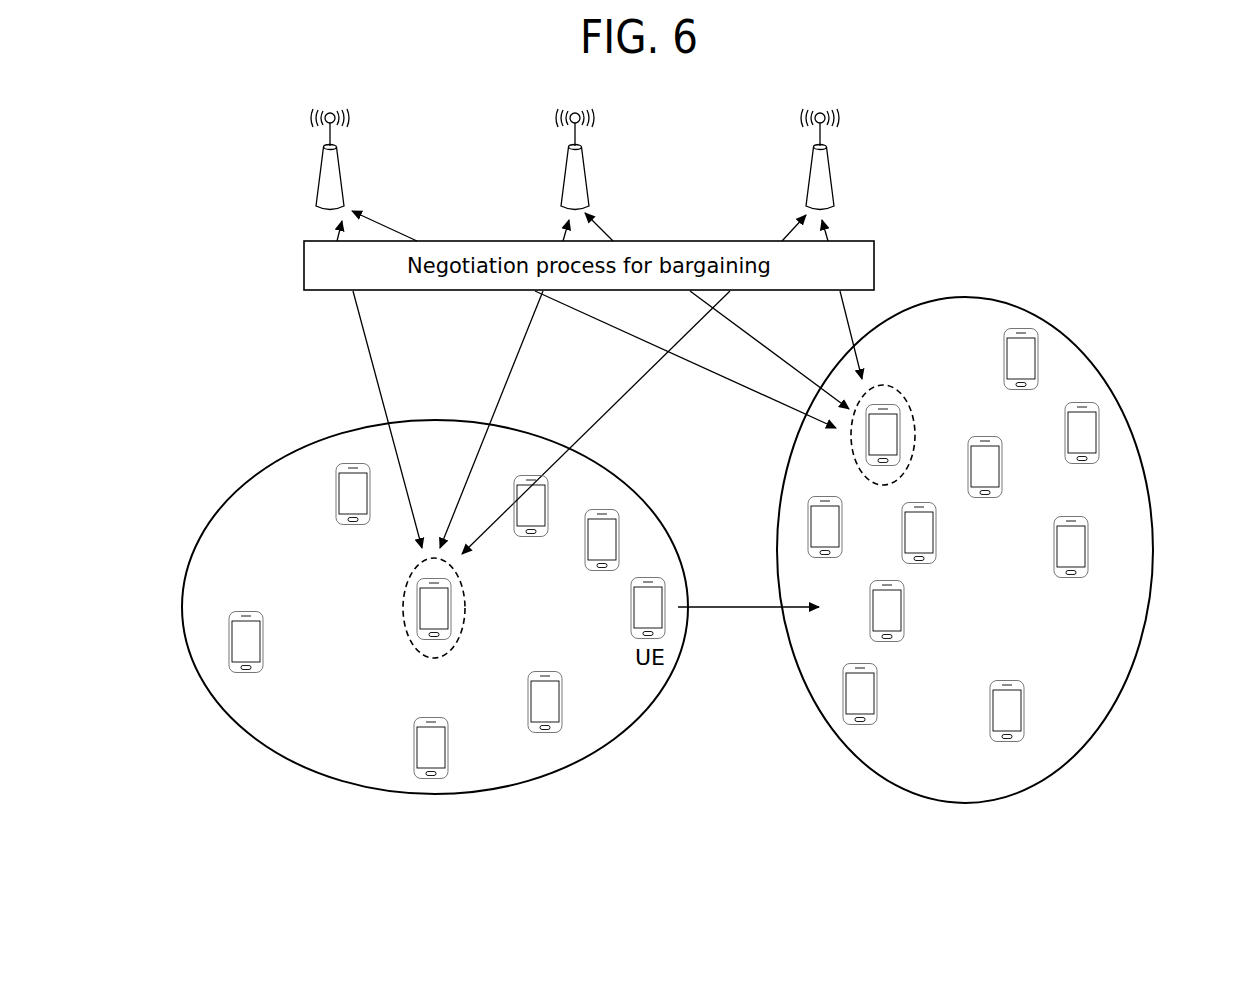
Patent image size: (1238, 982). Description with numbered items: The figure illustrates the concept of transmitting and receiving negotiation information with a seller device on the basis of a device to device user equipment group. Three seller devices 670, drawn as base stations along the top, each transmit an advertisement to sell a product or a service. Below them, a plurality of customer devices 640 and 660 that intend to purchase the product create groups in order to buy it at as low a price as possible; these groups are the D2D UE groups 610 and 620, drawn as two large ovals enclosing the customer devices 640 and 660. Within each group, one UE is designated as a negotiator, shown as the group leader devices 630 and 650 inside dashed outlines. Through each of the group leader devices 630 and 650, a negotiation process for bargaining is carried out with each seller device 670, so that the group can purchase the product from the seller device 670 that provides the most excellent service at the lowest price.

The D2D UE group 610 is at (436, 795).
The D2D UE group 620 is at (965, 803).
The group leader device 630 is at (465, 603).
The customer device 640 is at (264, 640).
The group leader device 650 is at (912, 400).
The customer device 660 is at (1053, 544).
The seller device 670 is at (344, 167).